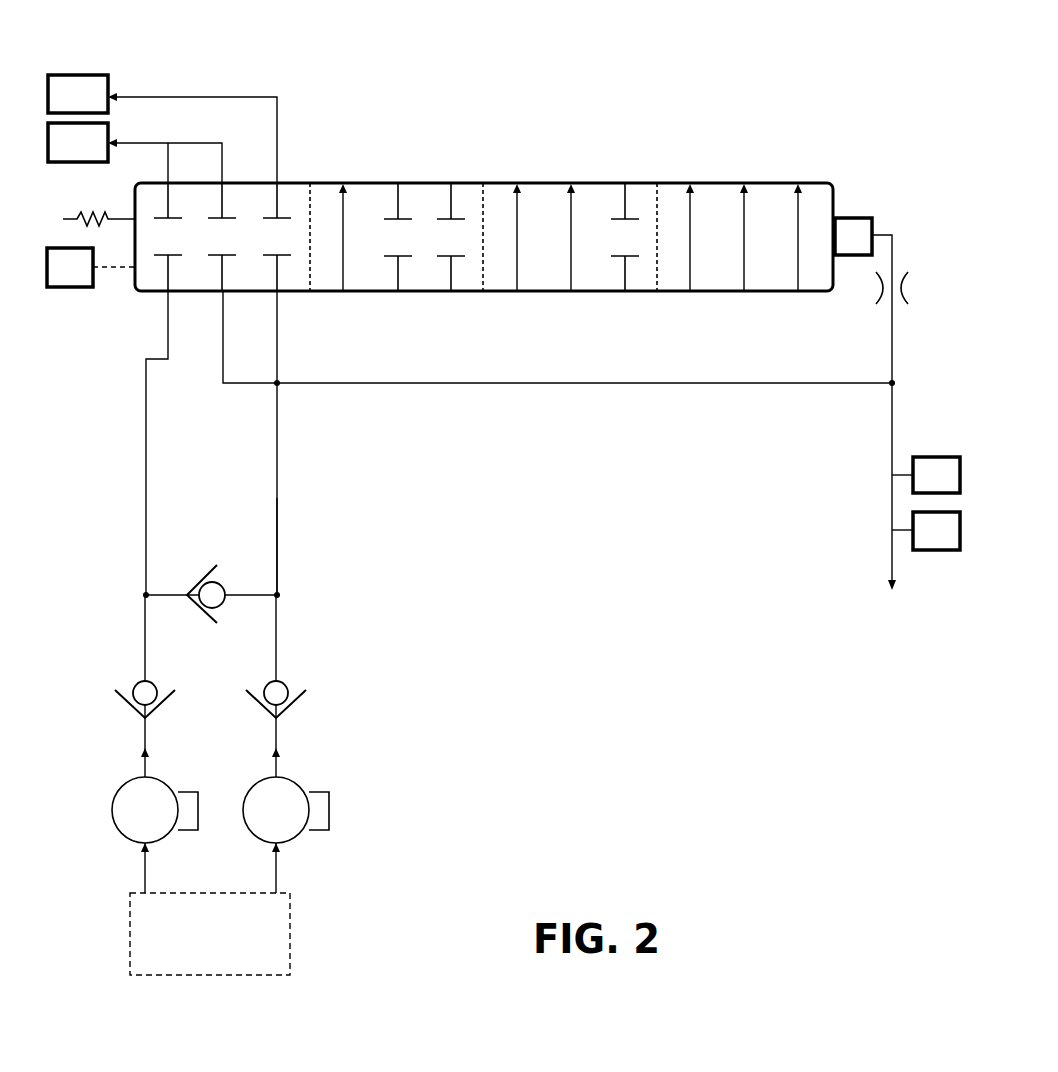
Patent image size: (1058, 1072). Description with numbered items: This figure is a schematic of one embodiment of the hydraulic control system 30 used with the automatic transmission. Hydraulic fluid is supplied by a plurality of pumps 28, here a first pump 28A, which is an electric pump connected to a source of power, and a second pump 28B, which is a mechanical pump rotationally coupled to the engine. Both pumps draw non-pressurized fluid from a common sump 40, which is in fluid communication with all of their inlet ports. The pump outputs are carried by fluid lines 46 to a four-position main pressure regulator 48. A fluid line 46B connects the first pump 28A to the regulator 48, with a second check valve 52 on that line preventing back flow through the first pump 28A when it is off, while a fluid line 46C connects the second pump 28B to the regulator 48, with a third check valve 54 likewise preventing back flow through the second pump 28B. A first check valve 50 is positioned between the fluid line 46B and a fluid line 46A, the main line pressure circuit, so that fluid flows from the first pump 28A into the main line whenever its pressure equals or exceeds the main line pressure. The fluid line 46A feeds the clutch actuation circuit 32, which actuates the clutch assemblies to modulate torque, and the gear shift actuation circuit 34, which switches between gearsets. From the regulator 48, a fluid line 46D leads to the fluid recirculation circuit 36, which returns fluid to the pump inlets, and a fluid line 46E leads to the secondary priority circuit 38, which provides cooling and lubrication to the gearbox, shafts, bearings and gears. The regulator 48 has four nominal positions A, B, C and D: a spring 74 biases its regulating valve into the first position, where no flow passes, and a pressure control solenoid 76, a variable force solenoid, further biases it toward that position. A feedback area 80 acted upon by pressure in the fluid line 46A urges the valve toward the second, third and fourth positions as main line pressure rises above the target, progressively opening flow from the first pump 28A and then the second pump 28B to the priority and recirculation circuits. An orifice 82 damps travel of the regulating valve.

The pumps 28 is at (205, 810).
The first pump 28A is at (122, 837).
The second pump 28B is at (292, 772).
The hydraulic control system 30 is at (657, 118).
The clutch actuation circuit 32 is at (930, 457).
The gear shift actuation circuit 34 is at (933, 550).
The fluid recirculation circuit 36 is at (78, 75).
The secondary priority circuit 38 is at (86, 162).
The sump 40 is at (295, 940).
The fluid lines 46 is at (284, 497).
The fluid line 46A is at (660, 384).
The fluid line 46B is at (146, 453).
The fluid line 46C is at (278, 442).
The fluid line 46D is at (207, 97).
The fluid line 46E is at (141, 143).
The four-position main pressure regulator 48 is at (557, 177).
The first check valve 50 is at (199, 585).
The second check valve 52 is at (128, 702).
The third check valve 54 is at (297, 707).
The spring 74 is at (95, 214).
The pressure control solenoid 76 is at (67, 287).
The feedback area 80 is at (852, 218).
The orifice 82 is at (900, 288).